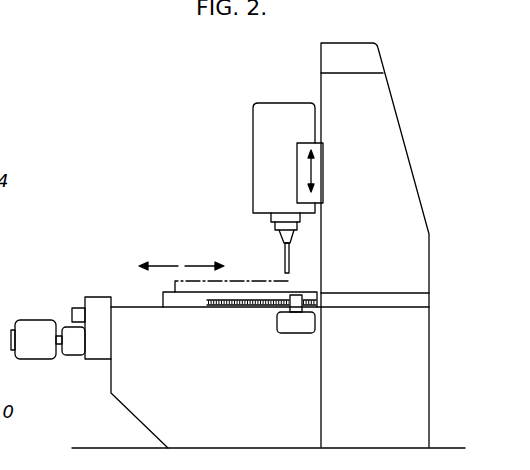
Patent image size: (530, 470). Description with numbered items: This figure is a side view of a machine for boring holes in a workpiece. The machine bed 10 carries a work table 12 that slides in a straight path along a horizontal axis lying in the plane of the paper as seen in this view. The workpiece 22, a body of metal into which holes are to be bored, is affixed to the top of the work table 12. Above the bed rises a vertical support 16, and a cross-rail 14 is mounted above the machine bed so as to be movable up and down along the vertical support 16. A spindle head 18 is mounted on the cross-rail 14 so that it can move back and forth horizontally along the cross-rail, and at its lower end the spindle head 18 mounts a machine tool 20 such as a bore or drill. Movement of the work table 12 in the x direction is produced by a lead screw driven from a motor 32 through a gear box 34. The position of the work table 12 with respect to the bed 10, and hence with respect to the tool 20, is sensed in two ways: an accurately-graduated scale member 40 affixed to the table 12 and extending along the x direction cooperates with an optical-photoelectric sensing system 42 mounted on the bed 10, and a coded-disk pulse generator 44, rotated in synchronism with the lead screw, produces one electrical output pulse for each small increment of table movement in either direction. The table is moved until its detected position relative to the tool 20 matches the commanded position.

The machine bed 10 is at (111, 392).
The work table 12 is at (163, 299).
The cross-rail 14 is at (323, 170).
The vertical support 16 is at (389, 103).
The spindle head 18 is at (253, 191).
The machine tool 20 is at (284, 253).
The workpiece 22 is at (175, 283).
The motor 32 is at (25, 329).
The gear box 34 is at (78, 353).
The scale member 40 is at (207, 305).
The optical-photoelectric sensing system 42 is at (295, 334).
The coded-disk pulse generator 44 is at (72, 312).